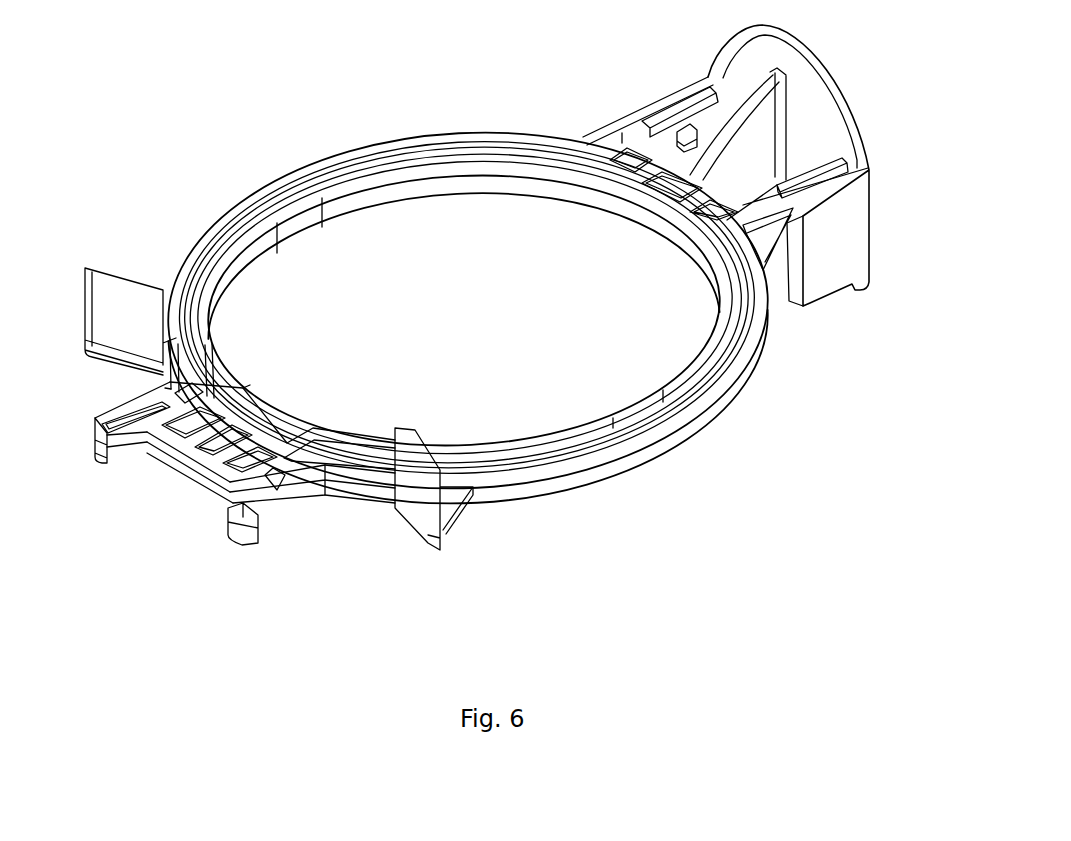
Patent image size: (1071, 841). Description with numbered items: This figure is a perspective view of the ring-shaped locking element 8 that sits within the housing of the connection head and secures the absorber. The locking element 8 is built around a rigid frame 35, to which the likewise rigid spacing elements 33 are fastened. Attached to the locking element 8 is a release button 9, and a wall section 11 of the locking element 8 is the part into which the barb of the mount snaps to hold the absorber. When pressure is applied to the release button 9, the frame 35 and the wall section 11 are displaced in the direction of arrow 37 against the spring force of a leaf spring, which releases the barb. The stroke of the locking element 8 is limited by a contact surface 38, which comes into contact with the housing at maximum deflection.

The locking element 8 is at (378, 101).
The release button 9 is at (838, 92).
The wall section 11 is at (252, 420).
The spacing elements 33 is at (127, 317).
The frame 35 is at (663, 380).
The arrow 37 is at (147, 517).
The contact surface 38 is at (99, 440).